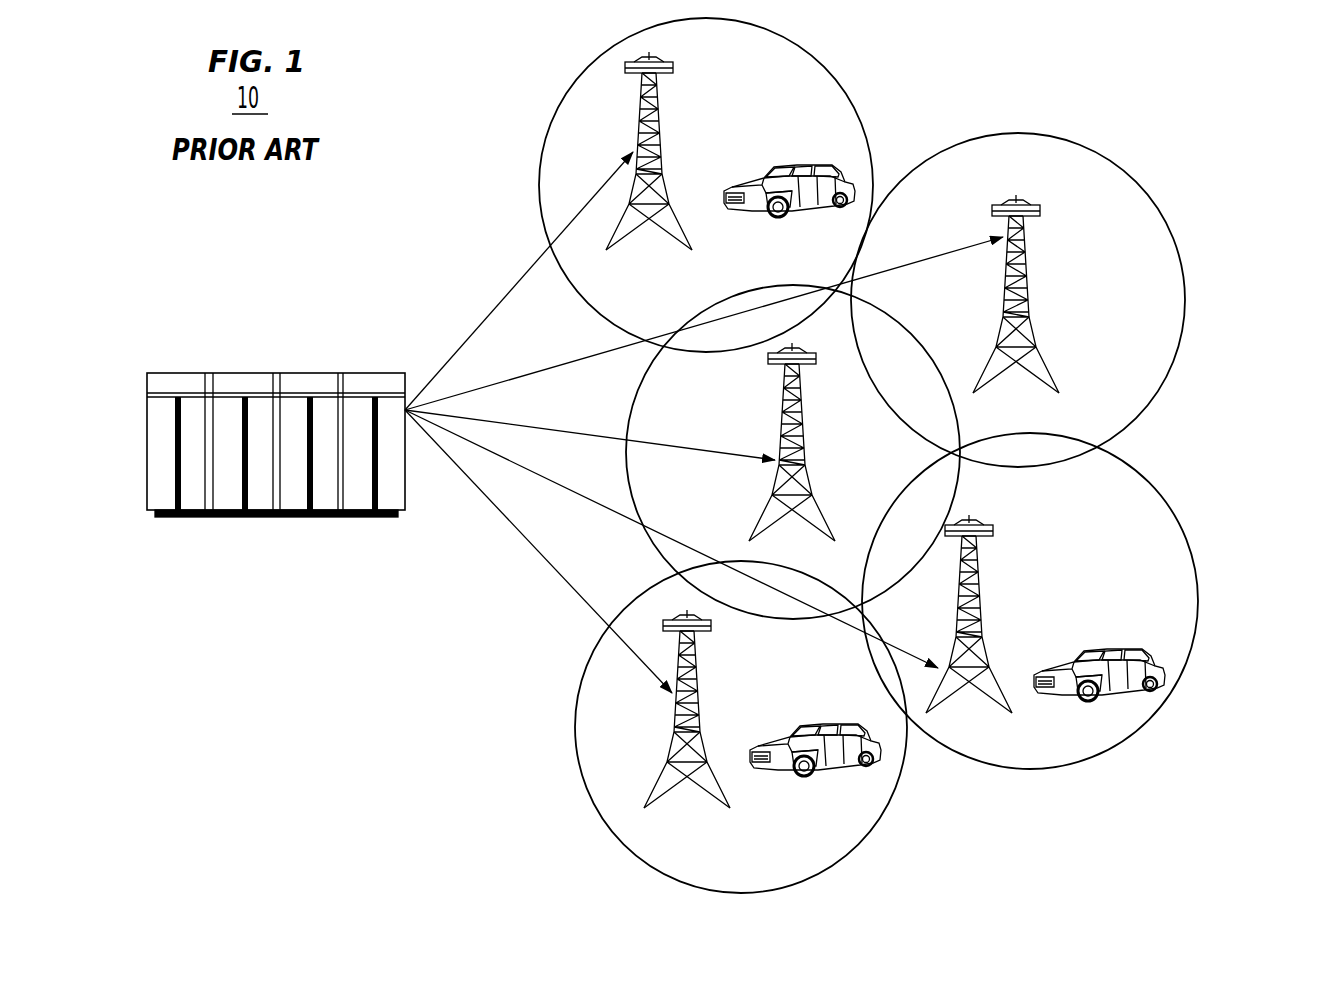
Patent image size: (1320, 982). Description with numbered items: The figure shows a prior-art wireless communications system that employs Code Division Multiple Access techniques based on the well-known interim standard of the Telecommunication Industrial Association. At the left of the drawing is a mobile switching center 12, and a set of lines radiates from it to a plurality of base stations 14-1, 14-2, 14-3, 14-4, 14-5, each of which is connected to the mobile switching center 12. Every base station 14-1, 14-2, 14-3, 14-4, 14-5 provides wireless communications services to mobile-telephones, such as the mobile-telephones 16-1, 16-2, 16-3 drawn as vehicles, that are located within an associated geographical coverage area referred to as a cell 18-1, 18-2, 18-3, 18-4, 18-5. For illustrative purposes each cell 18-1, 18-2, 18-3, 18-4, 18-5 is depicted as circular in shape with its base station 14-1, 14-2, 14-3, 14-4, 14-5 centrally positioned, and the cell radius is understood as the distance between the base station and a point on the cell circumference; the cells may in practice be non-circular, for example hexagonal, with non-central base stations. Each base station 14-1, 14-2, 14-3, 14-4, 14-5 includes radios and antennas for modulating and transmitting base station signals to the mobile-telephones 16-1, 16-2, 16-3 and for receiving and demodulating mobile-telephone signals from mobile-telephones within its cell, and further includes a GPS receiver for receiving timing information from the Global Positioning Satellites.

The mobile switching center 12 is at (283, 370).
The base station 14-1 is at (675, 68).
The base station 14-2 is at (775, 387).
The base station 14-3 is at (712, 628).
The base station 14-4 is at (995, 537).
The base station 14-5 is at (1025, 257).
The mobile-telephone 16-1 is at (745, 177).
The mobile-telephone 16-2 is at (773, 735).
The mobile-telephone 16-3 is at (1057, 660).
The cell 18-1 is at (541, 158).
The cell 18-2 is at (632, 398).
The cell 18-3 is at (577, 742).
The cell 18-4 is at (1197, 585).
The cell 18-5 is at (1135, 190).